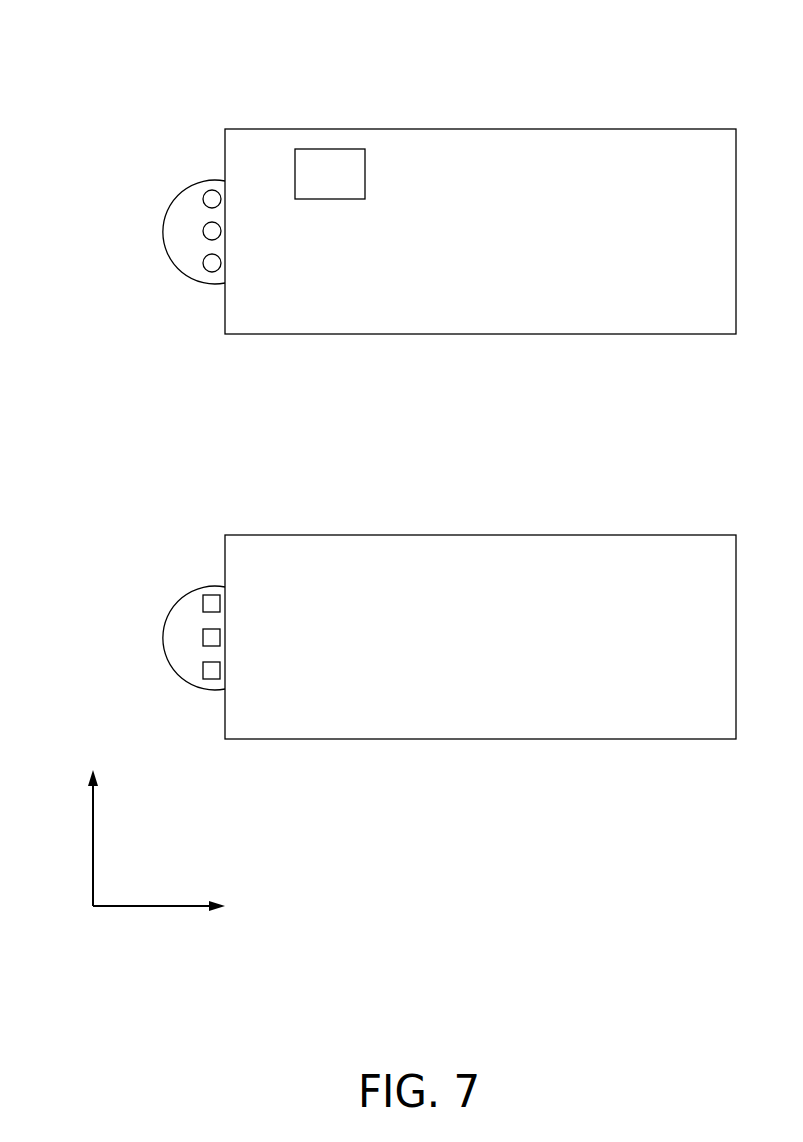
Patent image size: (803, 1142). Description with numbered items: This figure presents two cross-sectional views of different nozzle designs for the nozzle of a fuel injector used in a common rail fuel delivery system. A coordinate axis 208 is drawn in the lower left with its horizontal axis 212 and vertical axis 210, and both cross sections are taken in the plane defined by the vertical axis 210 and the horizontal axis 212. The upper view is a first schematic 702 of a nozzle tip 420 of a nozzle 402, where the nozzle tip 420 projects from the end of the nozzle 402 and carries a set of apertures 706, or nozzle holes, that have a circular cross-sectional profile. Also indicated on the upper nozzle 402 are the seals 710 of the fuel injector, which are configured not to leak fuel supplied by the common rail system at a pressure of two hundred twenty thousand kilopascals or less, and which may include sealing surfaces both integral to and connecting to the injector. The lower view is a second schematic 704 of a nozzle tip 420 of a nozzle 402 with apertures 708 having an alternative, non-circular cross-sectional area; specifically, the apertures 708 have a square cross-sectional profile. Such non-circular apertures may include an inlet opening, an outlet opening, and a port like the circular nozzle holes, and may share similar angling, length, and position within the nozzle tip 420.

The first schematic 702 is at (438, 409).
The second schematic 704 is at (450, 581).
The nozzle 402 is at (482, 334).
The nozzle tip 420 is at (177, 198).
The apertures 706 is at (202, 231).
The apertures 708 is at (202, 636).
The seals 710 is at (344, 185).
The coordinate axis 208 is at (129, 895).
The vertical axis 210 is at (160, 908).
The horizontal axis 212 is at (88, 857).